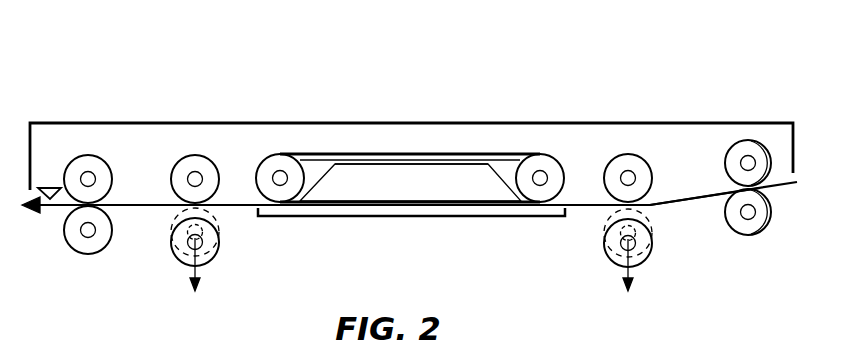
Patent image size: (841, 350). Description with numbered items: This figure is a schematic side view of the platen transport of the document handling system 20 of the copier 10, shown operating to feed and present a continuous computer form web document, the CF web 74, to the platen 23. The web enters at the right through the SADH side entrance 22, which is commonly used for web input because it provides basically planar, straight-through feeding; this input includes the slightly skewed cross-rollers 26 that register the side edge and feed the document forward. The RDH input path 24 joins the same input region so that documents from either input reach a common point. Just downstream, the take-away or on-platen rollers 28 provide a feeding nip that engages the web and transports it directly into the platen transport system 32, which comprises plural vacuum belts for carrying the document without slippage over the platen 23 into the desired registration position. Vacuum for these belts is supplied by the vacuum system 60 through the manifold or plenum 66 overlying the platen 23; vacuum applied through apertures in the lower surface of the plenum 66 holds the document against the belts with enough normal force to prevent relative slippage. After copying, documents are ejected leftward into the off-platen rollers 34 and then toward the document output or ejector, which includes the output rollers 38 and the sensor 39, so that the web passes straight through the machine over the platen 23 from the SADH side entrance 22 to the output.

The copier 10 is at (400, 52).
The document handling system 20 is at (370, 134).
The SADH side entrance 22 is at (771, 189).
The platen imaging station 23 is at (393, 216).
The RDH input path 24 is at (678, 180).
The cross-rollers 26 is at (767, 139).
The take-away or on-platen rollers 28 is at (632, 165).
The platen transport system 32 is at (517, 134).
The off-platen rollers 34 is at (210, 157).
The output rollers 38 is at (98, 155).
The sensor 39 is at (50, 186).
The vacuum system 60 is at (467, 160).
The manifold or plenum 66 is at (440, 178).
The CF web 74 is at (688, 203).